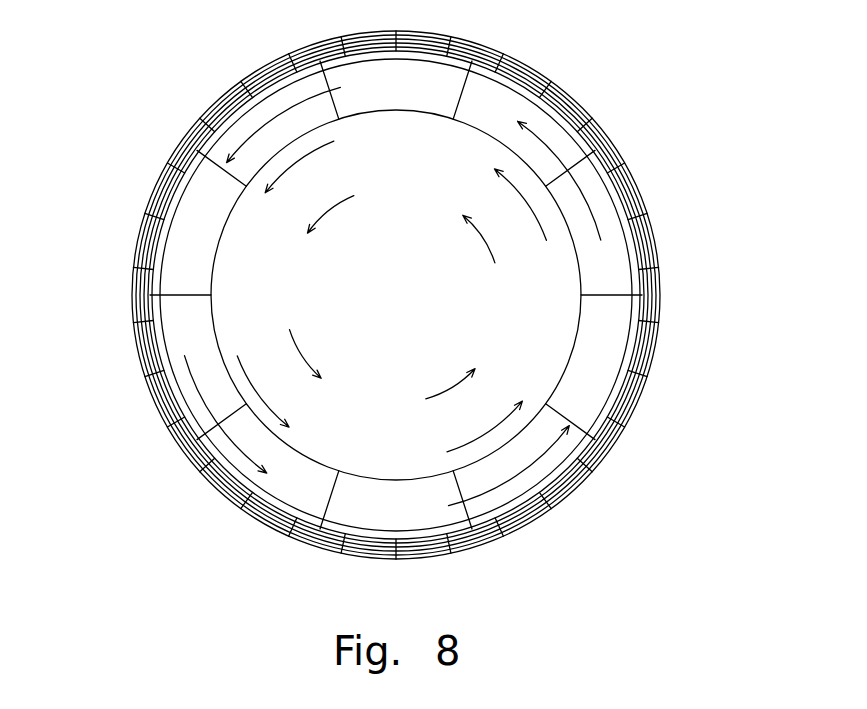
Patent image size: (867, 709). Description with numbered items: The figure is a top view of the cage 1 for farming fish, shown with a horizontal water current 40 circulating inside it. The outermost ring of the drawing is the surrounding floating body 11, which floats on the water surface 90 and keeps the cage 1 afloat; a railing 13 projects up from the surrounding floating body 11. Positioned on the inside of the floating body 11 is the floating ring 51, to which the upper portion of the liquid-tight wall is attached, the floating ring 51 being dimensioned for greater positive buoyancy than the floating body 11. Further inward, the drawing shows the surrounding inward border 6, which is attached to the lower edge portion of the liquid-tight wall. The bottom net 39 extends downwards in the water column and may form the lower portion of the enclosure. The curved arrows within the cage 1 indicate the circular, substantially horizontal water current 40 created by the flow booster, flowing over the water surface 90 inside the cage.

The cage 1 is at (142, 143).
The surrounding floating body 11 is at (140, 237).
The railing 13 is at (138, 293).
The floating ring 51 is at (135, 305).
The inward border 6 is at (182, 345).
The bottom net 39 is at (363, 415).
The horizontal water current 40 is at (190, 425).
The water surface 90 is at (425, 297).